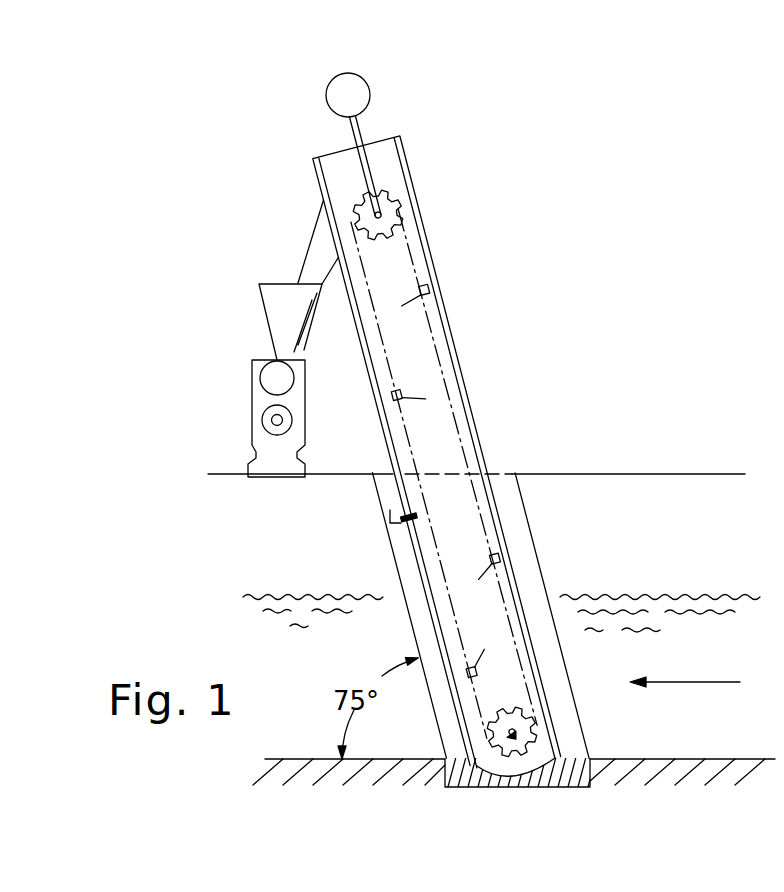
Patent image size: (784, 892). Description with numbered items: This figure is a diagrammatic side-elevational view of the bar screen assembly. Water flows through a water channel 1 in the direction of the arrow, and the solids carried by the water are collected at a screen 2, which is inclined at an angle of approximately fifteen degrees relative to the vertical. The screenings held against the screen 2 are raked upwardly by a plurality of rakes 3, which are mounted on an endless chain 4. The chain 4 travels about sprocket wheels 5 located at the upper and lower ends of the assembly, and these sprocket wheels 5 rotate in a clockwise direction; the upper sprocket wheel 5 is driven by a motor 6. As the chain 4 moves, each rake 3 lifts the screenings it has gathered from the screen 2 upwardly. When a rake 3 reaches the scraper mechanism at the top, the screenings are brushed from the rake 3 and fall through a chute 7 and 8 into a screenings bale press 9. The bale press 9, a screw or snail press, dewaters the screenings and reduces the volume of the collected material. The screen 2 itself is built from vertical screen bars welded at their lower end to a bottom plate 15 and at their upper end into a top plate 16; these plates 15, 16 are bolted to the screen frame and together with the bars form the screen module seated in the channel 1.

The water channel 1 is at (736, 726).
The screen 2 is at (430, 598).
The rakes 3 is at (392, 393).
The endless chain 4 is at (478, 445).
The sprocket wheels 5 is at (400, 210).
The motor 6 is at (369, 88).
The chute 7 is at (316, 234).
The chute 8 is at (268, 309).
The screenings bale press 9 is at (252, 407).
The bottom plate 15 is at (444, 748).
The top plate 16 is at (395, 524).